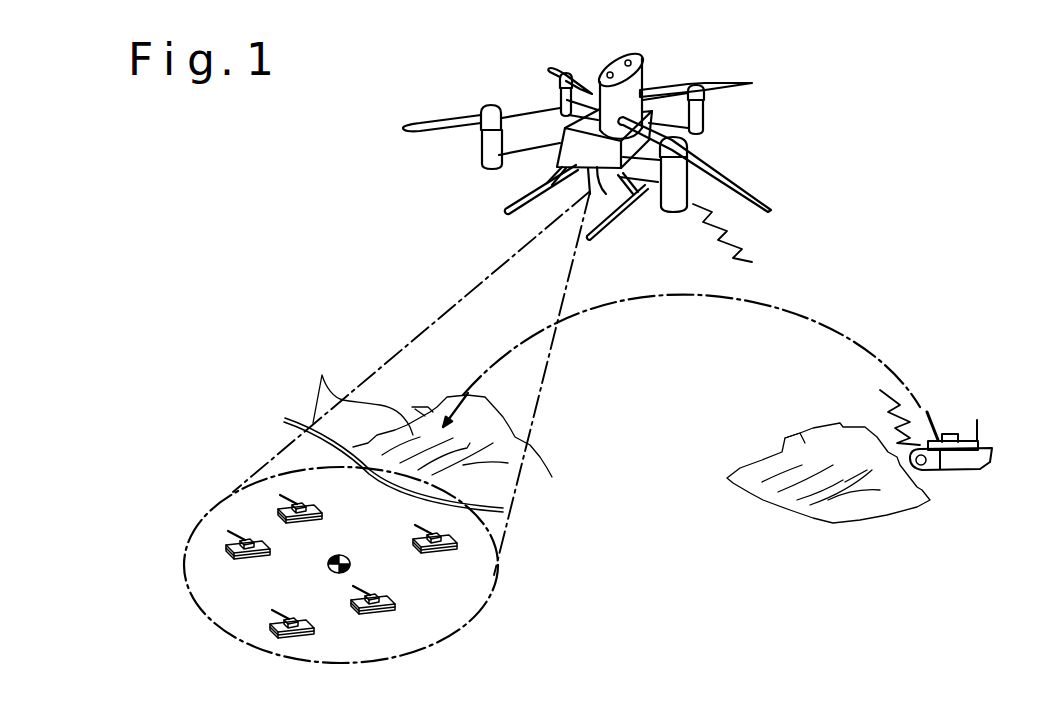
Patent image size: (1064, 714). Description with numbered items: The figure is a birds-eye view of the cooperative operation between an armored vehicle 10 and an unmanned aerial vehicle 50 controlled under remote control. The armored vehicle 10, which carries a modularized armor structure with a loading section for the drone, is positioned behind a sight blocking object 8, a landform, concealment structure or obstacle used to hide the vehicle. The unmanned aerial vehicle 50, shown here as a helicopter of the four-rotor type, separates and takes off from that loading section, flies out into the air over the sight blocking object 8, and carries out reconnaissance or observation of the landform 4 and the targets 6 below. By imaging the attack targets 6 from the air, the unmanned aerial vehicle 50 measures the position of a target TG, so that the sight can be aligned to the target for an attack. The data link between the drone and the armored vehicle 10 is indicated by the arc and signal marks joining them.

The unmanned aerial vehicle 50 is at (767, 78).
The landform 4 is at (322, 376).
The targets 6 is at (283, 503).
The target TG is at (350, 556).
The sight blocking object 8 is at (865, 510).
The armored vehicle 10 is at (978, 443).